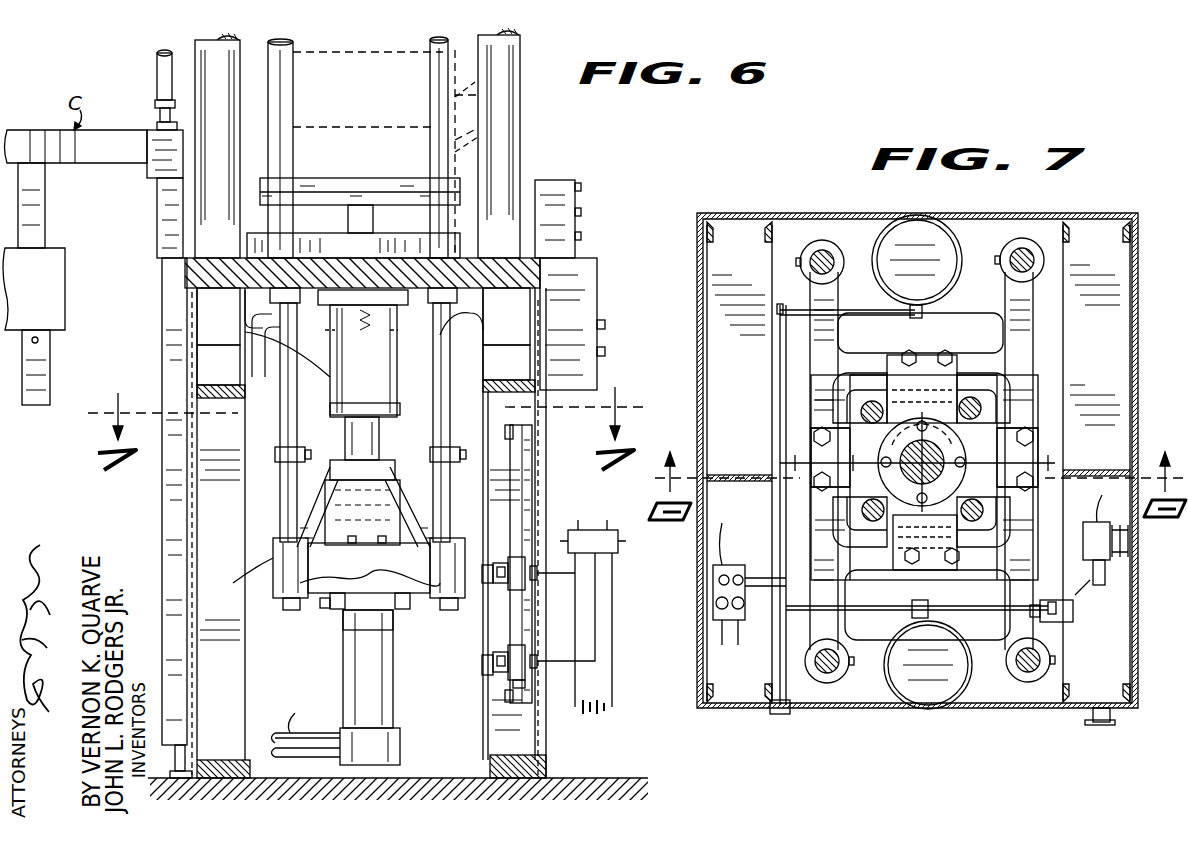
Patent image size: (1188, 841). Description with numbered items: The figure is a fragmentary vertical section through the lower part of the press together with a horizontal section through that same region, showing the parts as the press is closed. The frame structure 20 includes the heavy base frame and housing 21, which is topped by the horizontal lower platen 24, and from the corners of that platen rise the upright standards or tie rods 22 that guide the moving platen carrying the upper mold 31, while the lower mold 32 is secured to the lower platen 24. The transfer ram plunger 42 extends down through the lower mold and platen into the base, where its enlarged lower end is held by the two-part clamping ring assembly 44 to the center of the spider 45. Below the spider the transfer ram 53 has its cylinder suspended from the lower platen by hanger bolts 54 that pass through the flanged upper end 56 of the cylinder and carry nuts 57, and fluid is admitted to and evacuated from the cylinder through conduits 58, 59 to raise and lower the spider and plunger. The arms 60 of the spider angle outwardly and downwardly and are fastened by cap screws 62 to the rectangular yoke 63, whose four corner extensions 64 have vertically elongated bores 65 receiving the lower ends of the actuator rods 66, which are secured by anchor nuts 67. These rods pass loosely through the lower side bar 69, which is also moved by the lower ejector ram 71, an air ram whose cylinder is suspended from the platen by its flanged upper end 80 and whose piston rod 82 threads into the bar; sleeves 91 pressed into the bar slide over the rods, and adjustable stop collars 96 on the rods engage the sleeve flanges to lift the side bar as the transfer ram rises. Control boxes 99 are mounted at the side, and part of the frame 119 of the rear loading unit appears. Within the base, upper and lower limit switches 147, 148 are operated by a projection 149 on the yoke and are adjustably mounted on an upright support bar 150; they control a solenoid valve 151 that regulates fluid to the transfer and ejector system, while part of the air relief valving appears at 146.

In FIG. 6, the frame structure 20 is at (188, 528).
In FIG. 7, the frame structure 20 is at (742, 712).
In FIG. 6, the base frame and housing 21 is at (530, 740).
In FIG. 7, the base frame and housing 21 is at (707, 392).
In FIG. 6, the upright standards or tie rods 22 is at (240, 60).
In FIG. 6, the lower platen 24 is at (186, 276).
In FIG. 6, the upper mold 31 is at (517, 82).
In FIG. 6, the lower mold 32 is at (515, 130).
In FIG. 6, the transfer ram plunger 42 is at (378, 440).
In FIG. 7, the transfer ram plunger 42 is at (930, 455).
In FIG. 7, the two-part clamping ring assembly 44 is at (880, 470).
In FIG. 7, the spider 45 is at (965, 388).
In FIG. 6, the transfer ram 53 is at (388, 678).
In FIG. 6, the hanger bolts 54 is at (340, 410).
In FIG. 7, the hanger bolts 54 is at (975, 408).
In FIG. 7, the flanged upper end of the cylinder 56 is at (872, 520).
In FIG. 6, the nuts 57 is at (322, 608).
In FIG. 6, the conduit 58 is at (285, 733).
In FIG. 6, the conduit 59 is at (325, 748).
In FIG. 6, the arms of the spider 60 is at (420, 498).
In FIG. 7, the arms of the spider 60 is at (890, 378).
In FIG. 6, the cap screws 62 is at (345, 543).
In FIG. 7, the cap screws 62 is at (910, 356).
In FIG. 6, the yoke 63 is at (368, 621).
In FIG. 7, the corner extensions 64 is at (1007, 310).
In FIG. 7, the vertically elongated bores 65 is at (820, 250).
In FIG. 6, the actuator rods 66 is at (372, 78).
In FIG. 7, the actuator rods 66 is at (828, 256).
In FIG. 6, the anchor nuts 67 is at (275, 585).
In FIG. 6, the lower side bar 69 is at (330, 180).
In FIG. 6, the lower ejector ram 71 is at (335, 386).
In FIG. 7, the lower ejector ram 71 is at (940, 226).
In FIG. 6, the flanged upper end of the cylinder 80 is at (400, 300).
In FIG. 6, the piston rod 82 is at (380, 215).
In FIG. 6, the sleeves 91 is at (294, 222).
In FIG. 6, the stop collars 96 is at (275, 455).
In FIG. 6, the control boxes 99 is at (580, 272).
In FIG. 6, the frame of unit C 119 is at (52, 372).
In FIG. 7, the valving 146 is at (712, 614).
In FIG. 6, the upper limit switch 147 is at (500, 585).
In FIG. 6, the lower limit switch 148 is at (490, 674).
In FIG. 7, the lower limit switch 148 is at (1100, 585).
In FIG. 6, the projection 149 is at (475, 555).
In FIG. 6, the upright support bar 150 is at (520, 690).
In FIG. 6, the solenoid valve 151 is at (605, 553).